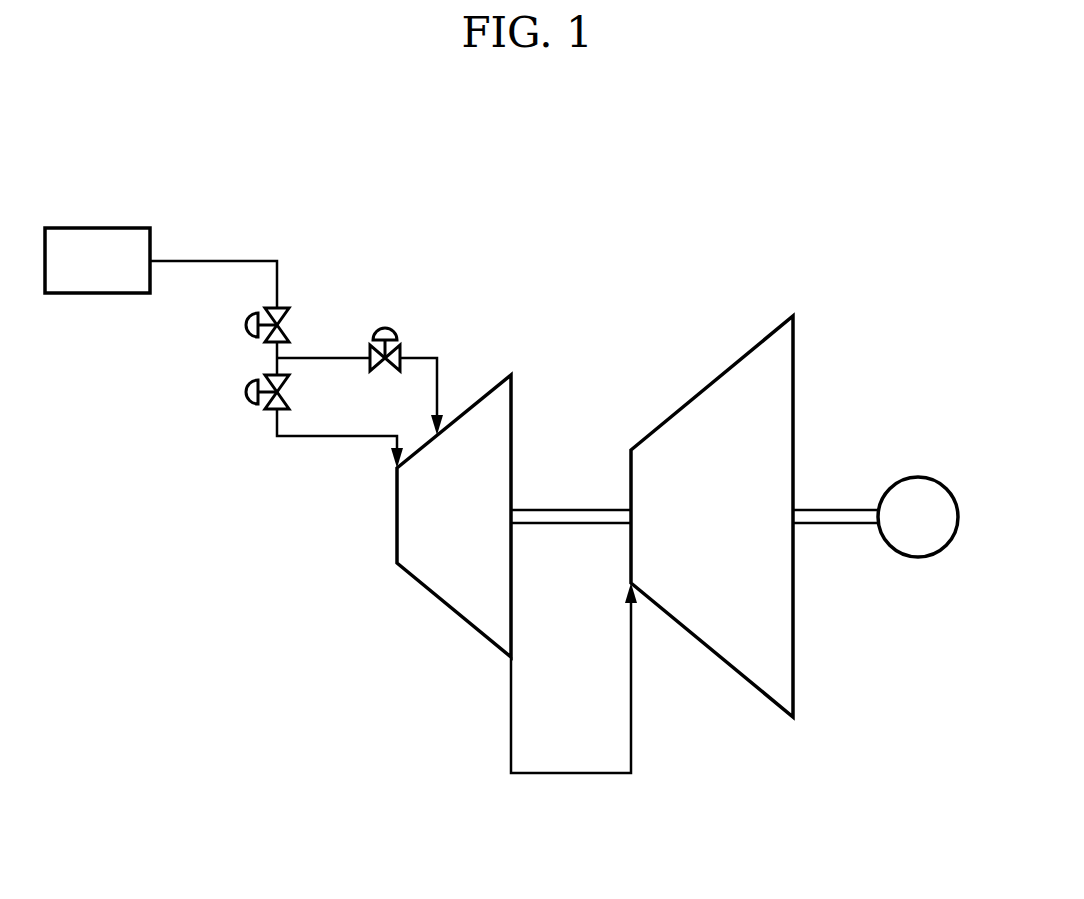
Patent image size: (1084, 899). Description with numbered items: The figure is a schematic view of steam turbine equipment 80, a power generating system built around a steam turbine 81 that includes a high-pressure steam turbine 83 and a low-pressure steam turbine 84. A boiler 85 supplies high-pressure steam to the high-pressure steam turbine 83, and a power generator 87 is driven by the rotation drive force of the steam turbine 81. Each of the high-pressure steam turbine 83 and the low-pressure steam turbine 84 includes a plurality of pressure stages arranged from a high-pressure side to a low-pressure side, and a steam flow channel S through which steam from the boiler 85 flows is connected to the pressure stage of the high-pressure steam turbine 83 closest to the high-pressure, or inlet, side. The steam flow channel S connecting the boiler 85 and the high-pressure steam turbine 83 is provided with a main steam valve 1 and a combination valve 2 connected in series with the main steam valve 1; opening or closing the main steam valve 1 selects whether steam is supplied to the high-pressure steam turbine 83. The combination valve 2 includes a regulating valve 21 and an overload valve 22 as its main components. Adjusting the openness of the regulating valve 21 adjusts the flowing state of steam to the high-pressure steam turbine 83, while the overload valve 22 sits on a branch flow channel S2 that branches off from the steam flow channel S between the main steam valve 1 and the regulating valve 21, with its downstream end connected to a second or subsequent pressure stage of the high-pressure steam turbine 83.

The steam turbine equipment 80 is at (840, 228).
The steam turbine 81 is at (596, 348).
The high-pressure steam turbine 83 is at (490, 392).
The low-pressure steam turbine 84 is at (717, 378).
The boiler 85 is at (98, 228).
The power generator 87 is at (918, 477).
The main steam valve 1 is at (244, 325).
The regulating valve 21 is at (244, 392).
The overload valve 22 is at (383, 325).
The combination valve 2 is at (400, 262).
The steam flow channel S is at (205, 261).
The branch flow channel S2 is at (422, 355).